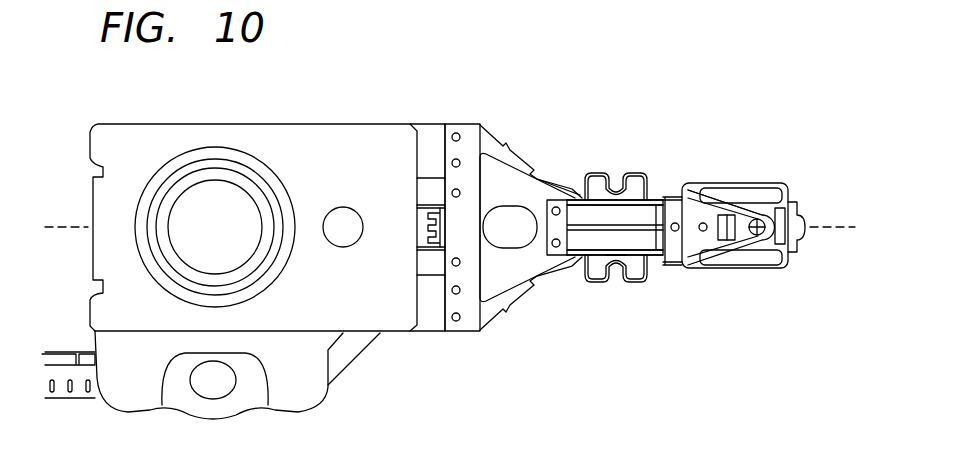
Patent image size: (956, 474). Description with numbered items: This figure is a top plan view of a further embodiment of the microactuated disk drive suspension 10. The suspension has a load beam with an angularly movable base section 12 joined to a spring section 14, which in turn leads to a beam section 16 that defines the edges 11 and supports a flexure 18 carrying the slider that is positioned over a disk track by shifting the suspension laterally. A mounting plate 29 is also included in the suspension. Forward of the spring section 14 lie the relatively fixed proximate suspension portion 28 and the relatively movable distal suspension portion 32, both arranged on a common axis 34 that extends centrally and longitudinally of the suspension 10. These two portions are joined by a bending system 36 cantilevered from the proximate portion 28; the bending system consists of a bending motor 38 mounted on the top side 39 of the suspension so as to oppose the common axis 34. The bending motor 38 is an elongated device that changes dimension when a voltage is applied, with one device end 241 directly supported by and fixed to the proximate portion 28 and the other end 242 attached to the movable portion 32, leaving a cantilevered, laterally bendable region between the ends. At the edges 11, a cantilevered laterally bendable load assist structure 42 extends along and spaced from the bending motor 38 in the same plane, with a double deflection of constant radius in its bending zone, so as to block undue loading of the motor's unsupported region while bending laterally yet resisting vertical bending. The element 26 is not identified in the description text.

The microactuated disk drive suspension 10 is at (78, 117).
The mounting plate 29 is at (252, 128).
The common axis 34 is at (62, 228).
The base section 12 is at (427, 335).
The spring section 14 is at (487, 310).
The proximate suspension portion 28 is at (487, 167).
The edges 11 is at (552, 182).
The coupler block 26 is at (567, 253).
The device end 241 is at (575, 210).
The device end 242 is at (642, 247).
The load assist structure 42 is at (653, 178).
The bending system 36 is at (615, 258).
The beam section 16 is at (668, 262).
The flexure 18 is at (752, 183).
The distal suspension portion 32 is at (690, 210).
The top side 39 is at (672, 207).
The bending motor 38 is at (667, 243).